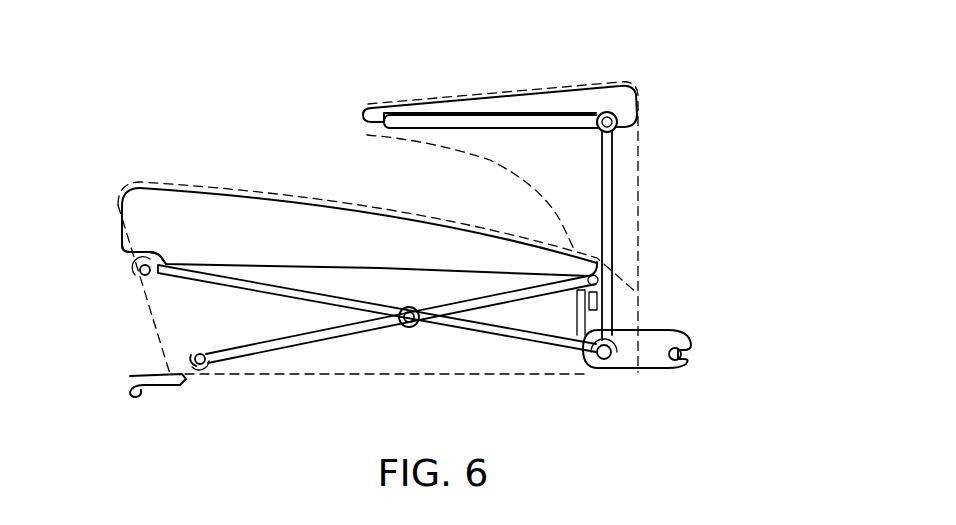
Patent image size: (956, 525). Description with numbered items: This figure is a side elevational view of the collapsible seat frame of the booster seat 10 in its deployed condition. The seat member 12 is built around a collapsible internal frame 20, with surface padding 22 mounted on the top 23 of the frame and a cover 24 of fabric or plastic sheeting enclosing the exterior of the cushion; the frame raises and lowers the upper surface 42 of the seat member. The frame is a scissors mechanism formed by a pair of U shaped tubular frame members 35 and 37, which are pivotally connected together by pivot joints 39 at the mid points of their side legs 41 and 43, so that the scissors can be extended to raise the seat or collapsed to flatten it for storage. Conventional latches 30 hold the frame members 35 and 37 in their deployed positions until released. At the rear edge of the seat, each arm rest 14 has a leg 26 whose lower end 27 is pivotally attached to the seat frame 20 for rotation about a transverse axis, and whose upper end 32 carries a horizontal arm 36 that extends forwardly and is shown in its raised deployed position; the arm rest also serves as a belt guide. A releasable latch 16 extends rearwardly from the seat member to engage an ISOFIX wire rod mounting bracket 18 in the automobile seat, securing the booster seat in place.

The booster seat 10 is at (738, 95).
The seat member 12 is at (294, 178).
The arm rest 14 is at (623, 86).
The releasable latch 16 is at (650, 357).
The wire rod mounting bracket 18 is at (678, 355).
The collapsible internal frame 20 is at (503, 364).
The surface padding 22 is at (247, 217).
The top of the frame 23 is at (215, 262).
The cover 24 is at (348, 208).
The leg 26 is at (607, 200).
The lower end 27 is at (607, 322).
The latch 30 is at (600, 293).
The upper end 32 is at (616, 126).
The U shaped tubular frame member 35 is at (213, 283).
The horizontal arm 36 is at (503, 88).
The U shaped tubular frame member 37 is at (275, 350).
The pivot joint 39 is at (416, 326).
The side leg 41 is at (313, 343).
The upper surface 42 is at (374, 168).
The side leg 43 is at (353, 307).